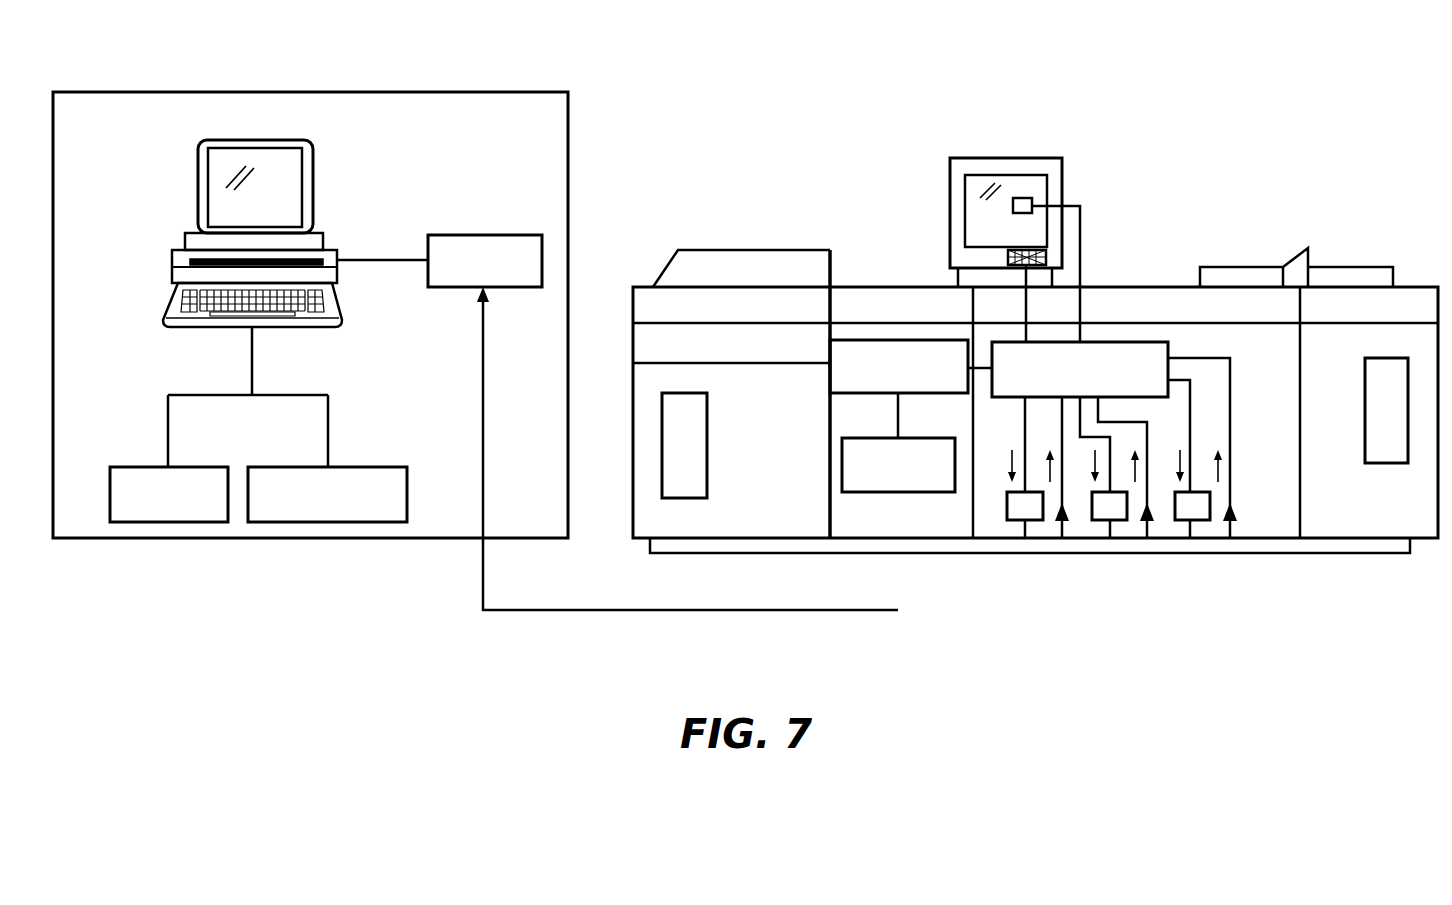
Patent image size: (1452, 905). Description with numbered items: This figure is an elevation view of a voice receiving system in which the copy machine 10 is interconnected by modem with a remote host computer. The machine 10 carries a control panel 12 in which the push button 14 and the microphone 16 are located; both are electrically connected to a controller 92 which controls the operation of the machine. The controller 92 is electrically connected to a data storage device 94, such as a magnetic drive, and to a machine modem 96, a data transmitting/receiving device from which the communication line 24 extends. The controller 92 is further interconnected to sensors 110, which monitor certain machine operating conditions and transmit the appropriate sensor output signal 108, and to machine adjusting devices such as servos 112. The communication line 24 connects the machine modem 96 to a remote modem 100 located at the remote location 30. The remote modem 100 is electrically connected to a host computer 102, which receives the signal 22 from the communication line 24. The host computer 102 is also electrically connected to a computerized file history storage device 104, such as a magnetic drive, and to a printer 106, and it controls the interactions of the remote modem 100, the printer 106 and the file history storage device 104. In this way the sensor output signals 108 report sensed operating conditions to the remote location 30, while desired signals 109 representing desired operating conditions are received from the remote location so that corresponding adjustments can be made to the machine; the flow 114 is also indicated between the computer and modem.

The copy machine 10 is at (800, 172).
The control panel 12 is at (987, 228).
The push button 14 is at (1023, 198).
The microphone 16 is at (1008, 260).
The signal 22 is at (415, 210).
The communication line 24 is at (610, 610).
The remote location 30 is at (305, 92).
The controller 92 is at (1132, 342).
The data storage device 94 is at (840, 376).
The machine modem 96 is at (840, 463).
The remote modem 100 is at (485, 235).
The host computer 102 is at (187, 263).
The computerized file history storage device 104 is at (355, 467).
The printer 106 is at (148, 467).
The sensor output signal 108 is at (415, 250).
The desired signal 109 is at (238, 348).
The sensor 110 is at (1062, 538).
The servo 112 is at (1023, 538).
The data transmission 114 is at (400, 275).